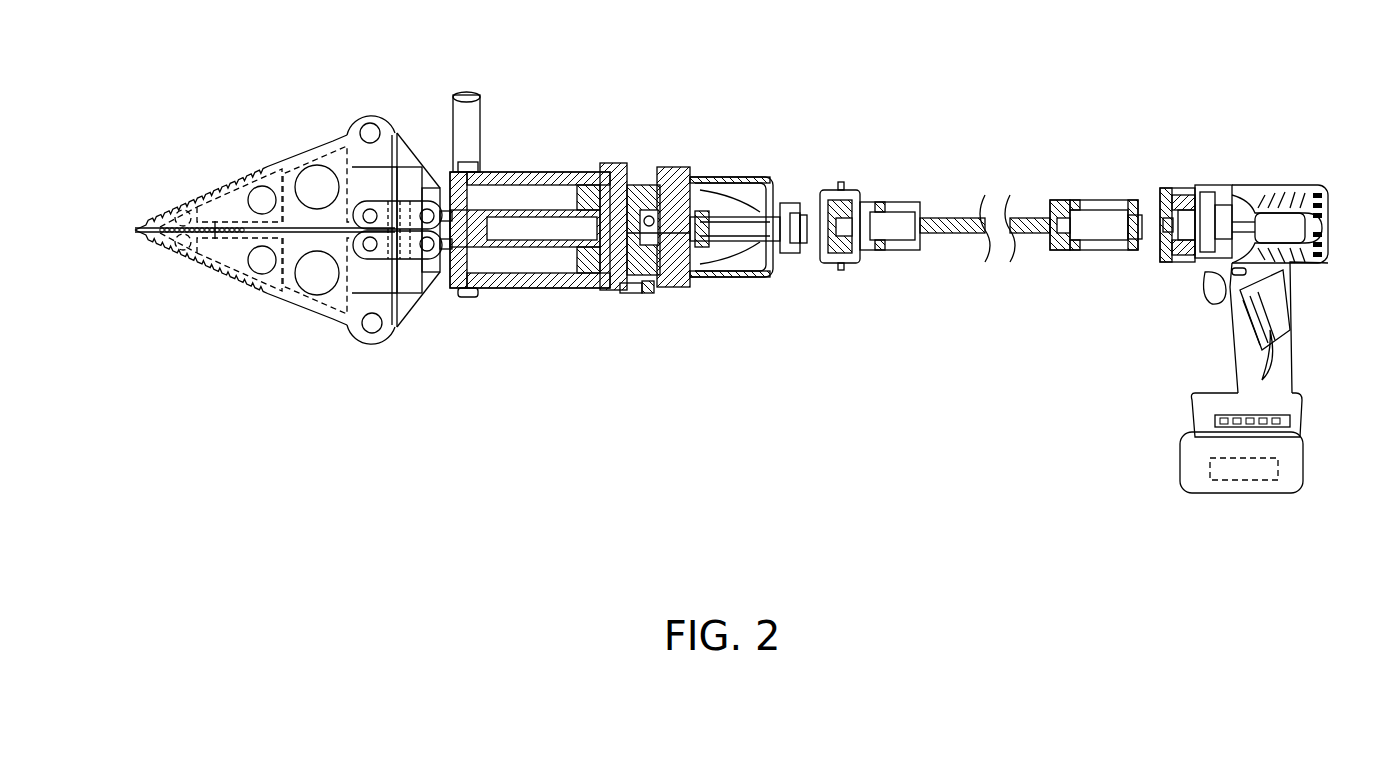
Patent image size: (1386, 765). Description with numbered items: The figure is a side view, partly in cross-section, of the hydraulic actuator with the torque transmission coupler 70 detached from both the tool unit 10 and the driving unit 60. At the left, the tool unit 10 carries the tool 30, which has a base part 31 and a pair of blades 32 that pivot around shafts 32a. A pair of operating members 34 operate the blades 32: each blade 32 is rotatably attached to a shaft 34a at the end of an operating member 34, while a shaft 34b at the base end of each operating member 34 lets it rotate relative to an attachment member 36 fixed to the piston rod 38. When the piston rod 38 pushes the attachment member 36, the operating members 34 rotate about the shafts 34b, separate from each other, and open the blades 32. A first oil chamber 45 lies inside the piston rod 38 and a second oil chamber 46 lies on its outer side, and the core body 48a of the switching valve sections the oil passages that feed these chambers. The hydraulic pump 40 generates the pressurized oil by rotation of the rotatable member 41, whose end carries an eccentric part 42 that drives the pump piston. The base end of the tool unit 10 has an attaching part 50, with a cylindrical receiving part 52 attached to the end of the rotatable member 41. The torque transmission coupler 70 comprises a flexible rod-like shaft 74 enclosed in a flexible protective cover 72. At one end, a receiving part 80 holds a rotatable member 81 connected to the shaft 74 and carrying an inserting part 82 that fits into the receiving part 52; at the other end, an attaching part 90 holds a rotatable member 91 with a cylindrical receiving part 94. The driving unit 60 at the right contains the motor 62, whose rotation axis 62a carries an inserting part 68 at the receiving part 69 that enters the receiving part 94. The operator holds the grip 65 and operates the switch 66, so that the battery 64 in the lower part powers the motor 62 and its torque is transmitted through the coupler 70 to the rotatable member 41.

The tool unit 10 is at (625, 112).
The tool 30 is at (408, 168).
The base part 31 is at (393, 133).
The blades 32 is at (290, 145).
The shafts 32a is at (370, 123).
The operating members 34 is at (427, 209).
The shaft 34a is at (370, 209).
The shaft 34b is at (446, 211).
The attachment member 36 is at (440, 275).
The piston rod 38 is at (480, 252).
The hydraulic pump 40 is at (745, 177).
The rotatable member 41 is at (740, 243).
The eccentric part 42 is at (720, 236).
The first oil chamber 45 is at (520, 216).
The second oil chamber 46 is at (555, 184).
The core body 48a is at (648, 214).
The attaching part 50 is at (788, 255).
The receiving part 52 is at (804, 245).
The driving unit 60 is at (1212, 160).
The motor 62 is at (1258, 200).
The rotation axis 62a is at (1220, 208).
The battery 64 is at (1233, 485).
The grip 65 is at (1293, 343).
The switch 66 is at (1212, 303).
The inserting part 68 is at (1176, 262).
The receiving part 69 is at (1165, 263).
The torque transmission coupler 70 is at (1030, 172).
The protective cover 72 is at (945, 218).
The rod-like shaft 74 is at (950, 234).
The receiving part 80 is at (880, 202).
The rotatable member 81 is at (890, 238).
The inserting part 82 is at (841, 265).
The attaching part 90 is at (1095, 200).
The rotatable member 91 is at (1090, 242).
The receiving part 94 is at (1135, 242).